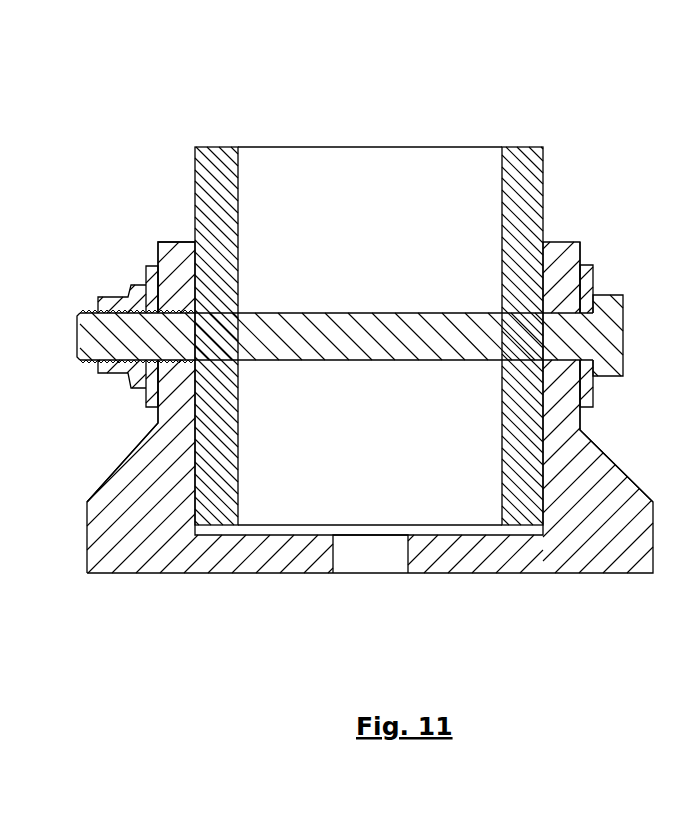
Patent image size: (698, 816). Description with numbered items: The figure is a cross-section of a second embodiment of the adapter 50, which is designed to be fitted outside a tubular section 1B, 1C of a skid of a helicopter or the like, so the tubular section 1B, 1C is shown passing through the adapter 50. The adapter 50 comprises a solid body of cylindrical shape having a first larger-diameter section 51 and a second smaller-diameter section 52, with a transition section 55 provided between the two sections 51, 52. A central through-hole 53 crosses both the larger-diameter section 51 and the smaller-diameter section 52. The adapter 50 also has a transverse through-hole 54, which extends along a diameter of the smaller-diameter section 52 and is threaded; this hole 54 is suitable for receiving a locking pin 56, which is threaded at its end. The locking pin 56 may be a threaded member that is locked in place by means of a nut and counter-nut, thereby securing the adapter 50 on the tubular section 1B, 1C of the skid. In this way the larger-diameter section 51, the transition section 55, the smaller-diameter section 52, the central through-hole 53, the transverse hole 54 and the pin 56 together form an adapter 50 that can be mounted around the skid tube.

The tubular section 1B is at (341, 289).
The tubular post 1C is at (193, 156).
The adapter 50 is at (347, 388).
The first larger-diameter section 51 is at (329, 461).
The second smaller-diameter section 52 is at (347, 340).
The central through-hole 53 is at (360, 570).
The transverse through-hole 54 is at (173, 313).
The transition section 55 is at (118, 466).
The locking pin 56 is at (0, 280).